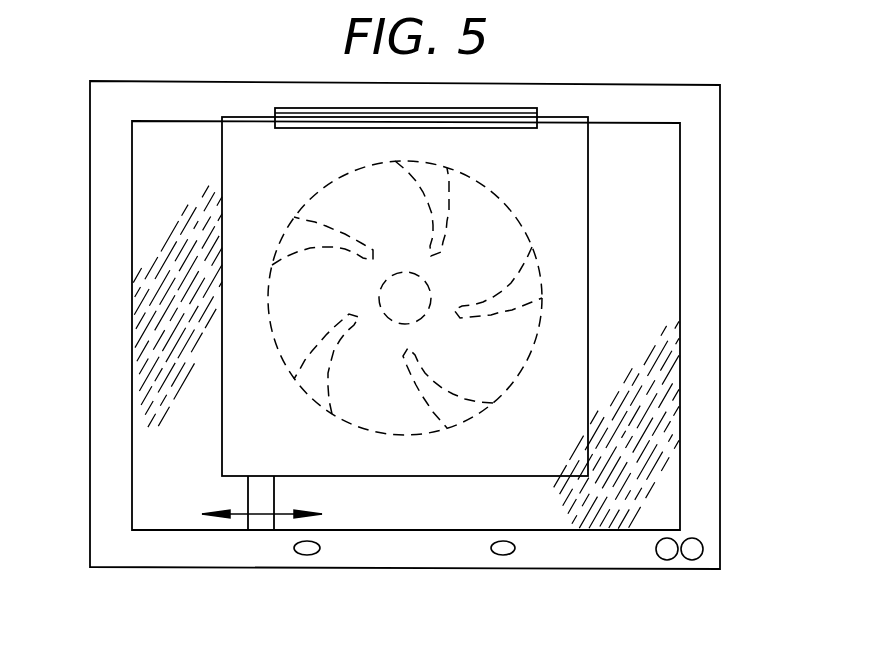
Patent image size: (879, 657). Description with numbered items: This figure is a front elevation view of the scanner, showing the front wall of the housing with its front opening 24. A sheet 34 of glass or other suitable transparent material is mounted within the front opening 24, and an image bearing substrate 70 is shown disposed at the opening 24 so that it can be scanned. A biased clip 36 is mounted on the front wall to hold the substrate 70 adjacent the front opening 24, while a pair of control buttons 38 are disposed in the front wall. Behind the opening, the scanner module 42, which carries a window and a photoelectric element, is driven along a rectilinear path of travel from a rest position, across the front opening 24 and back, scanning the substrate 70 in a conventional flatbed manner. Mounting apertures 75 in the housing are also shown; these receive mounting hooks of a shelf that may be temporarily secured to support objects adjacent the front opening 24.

The front opening 24 is at (193, 528).
The sheet 34 is at (632, 418).
The biased clip 36 is at (300, 112).
The control buttons 38 is at (690, 558).
The scanner module 42 is at (257, 488).
The substrate 70 is at (562, 150).
The mounting apertures 75 is at (501, 555).